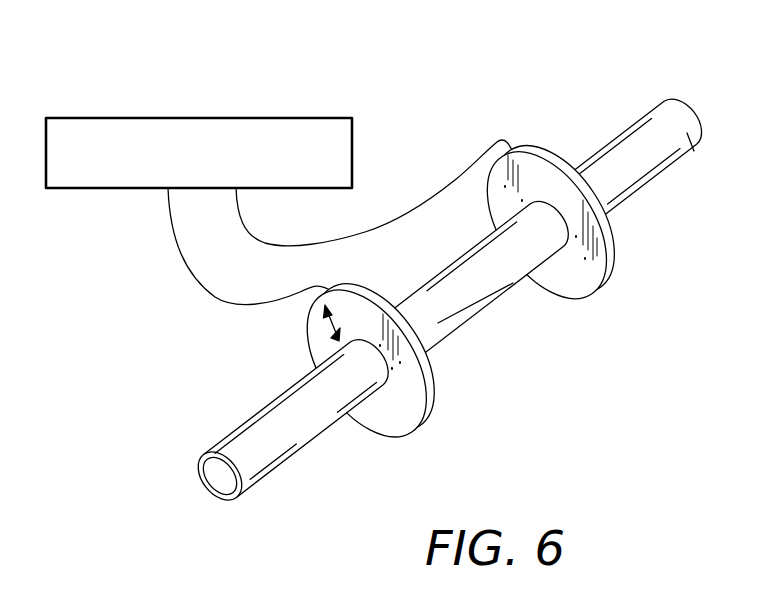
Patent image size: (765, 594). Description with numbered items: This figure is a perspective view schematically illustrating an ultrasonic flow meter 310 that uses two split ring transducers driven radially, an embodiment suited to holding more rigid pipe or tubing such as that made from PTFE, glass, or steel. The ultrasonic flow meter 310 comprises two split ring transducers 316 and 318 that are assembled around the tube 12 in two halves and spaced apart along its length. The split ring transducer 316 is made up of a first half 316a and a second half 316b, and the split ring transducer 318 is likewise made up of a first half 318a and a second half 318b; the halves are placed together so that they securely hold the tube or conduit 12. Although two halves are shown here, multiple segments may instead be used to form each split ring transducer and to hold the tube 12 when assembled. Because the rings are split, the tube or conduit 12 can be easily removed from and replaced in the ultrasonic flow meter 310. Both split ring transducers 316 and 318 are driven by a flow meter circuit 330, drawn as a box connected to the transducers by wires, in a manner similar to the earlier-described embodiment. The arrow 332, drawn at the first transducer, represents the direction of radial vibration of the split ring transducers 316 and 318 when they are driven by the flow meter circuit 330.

The tube 12 is at (282, 467).
The ultrasonic flow meter 310 is at (444, 274).
The split ring transducer 316 is at (520, 238).
The first half 316a is at (492, 190).
The second half 316b is at (555, 162).
The split ring transducer 318 is at (360, 385).
The first half 318a is at (310, 348).
The second half 318b is at (437, 397).
The flow meter circuit 330 is at (315, 118).
The arrow 332 is at (324, 321).